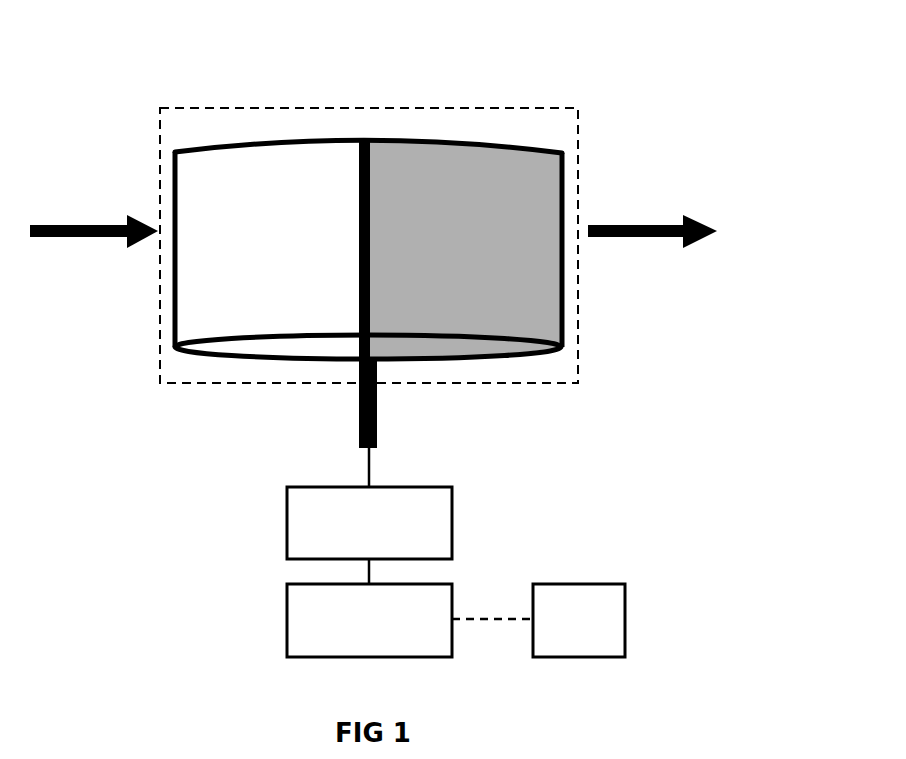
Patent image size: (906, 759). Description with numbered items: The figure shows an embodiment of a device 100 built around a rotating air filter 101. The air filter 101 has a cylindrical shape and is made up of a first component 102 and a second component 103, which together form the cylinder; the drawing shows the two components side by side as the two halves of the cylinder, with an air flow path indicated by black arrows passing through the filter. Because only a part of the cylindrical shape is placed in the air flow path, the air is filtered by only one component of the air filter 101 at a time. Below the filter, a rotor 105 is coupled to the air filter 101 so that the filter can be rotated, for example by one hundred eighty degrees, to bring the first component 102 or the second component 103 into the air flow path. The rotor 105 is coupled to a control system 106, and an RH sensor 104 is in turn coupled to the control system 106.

The device 100 is at (652, 104).
The air filter 101 is at (158, 127).
The first component 102 is at (288, 200).
The second component 103 is at (452, 200).
The RH sensor 104 is at (577, 584).
The rotor 105 is at (452, 519).
The control system 106 is at (287, 605).